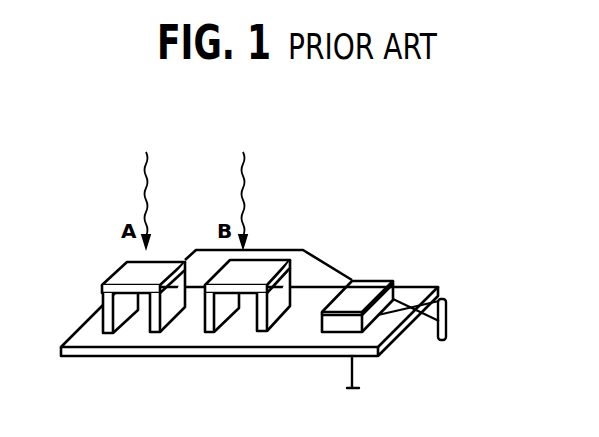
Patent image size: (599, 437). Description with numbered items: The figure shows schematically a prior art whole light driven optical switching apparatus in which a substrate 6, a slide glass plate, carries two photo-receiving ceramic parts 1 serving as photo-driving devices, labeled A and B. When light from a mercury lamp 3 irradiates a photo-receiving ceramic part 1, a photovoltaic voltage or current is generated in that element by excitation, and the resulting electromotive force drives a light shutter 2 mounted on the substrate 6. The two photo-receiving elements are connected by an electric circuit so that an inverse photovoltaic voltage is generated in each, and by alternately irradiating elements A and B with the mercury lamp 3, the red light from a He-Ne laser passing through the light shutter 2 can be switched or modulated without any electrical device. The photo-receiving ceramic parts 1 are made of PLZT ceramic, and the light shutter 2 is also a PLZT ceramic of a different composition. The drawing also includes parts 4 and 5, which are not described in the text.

The photo-receiving ceramic part 1 is at (118, 279).
The light shutter 2 is at (340, 323).
The mercury lamp 3 is at (193, 185).
The top plate 4 is at (366, 288).
The terminal 5 is at (441, 341).
The substrate 6 is at (108, 352).